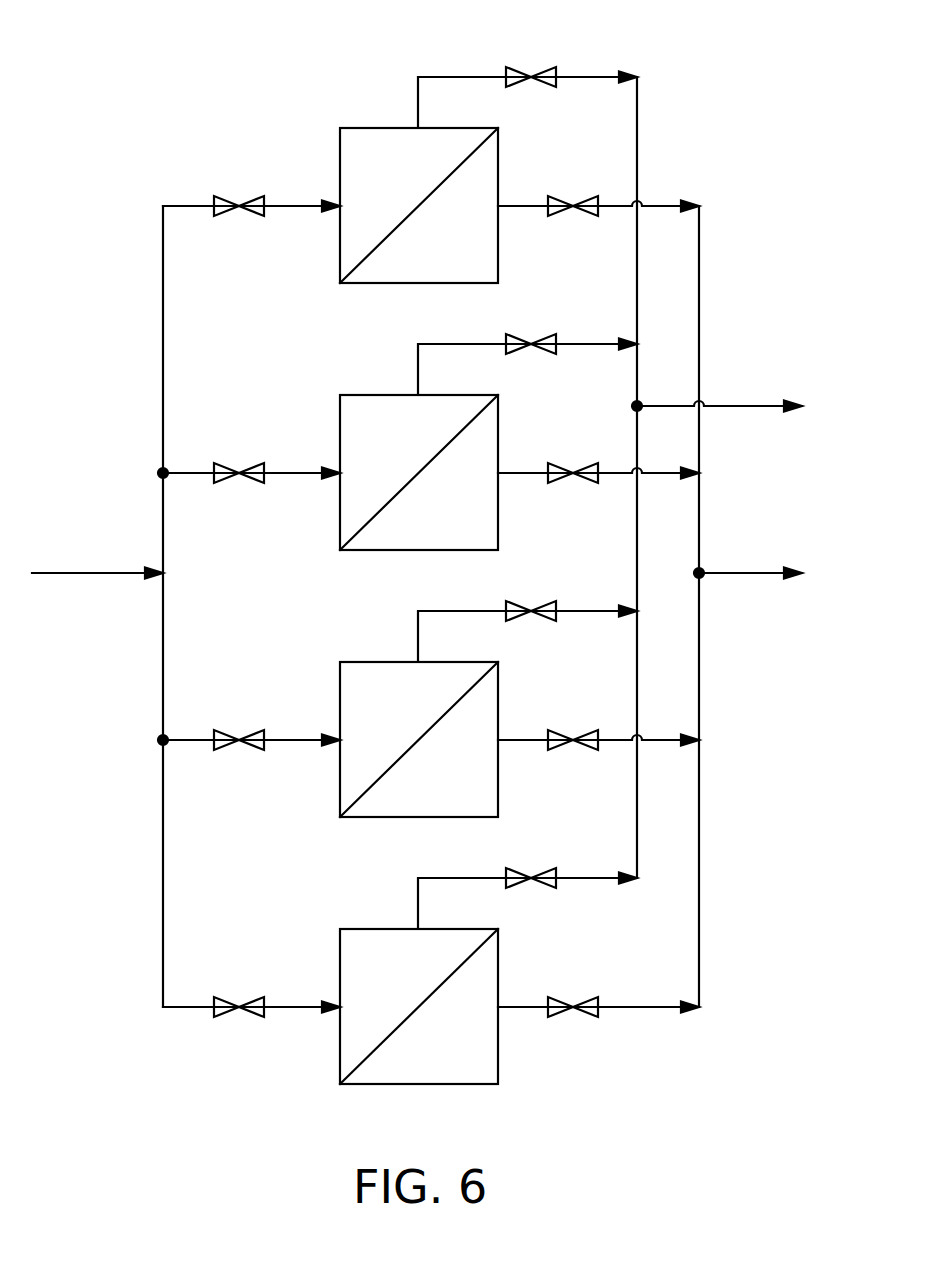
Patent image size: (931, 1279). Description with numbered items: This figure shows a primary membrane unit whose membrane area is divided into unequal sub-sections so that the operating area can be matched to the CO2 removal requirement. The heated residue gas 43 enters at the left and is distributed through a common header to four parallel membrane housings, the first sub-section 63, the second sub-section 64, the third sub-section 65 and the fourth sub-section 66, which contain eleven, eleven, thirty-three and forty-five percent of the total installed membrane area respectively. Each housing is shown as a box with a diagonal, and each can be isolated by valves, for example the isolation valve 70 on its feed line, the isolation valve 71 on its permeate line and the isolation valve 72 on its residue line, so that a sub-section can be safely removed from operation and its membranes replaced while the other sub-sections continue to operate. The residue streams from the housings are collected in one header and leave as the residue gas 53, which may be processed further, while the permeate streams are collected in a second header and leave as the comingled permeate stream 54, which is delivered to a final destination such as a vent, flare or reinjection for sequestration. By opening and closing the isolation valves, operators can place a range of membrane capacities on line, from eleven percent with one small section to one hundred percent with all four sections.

The residue gas 43 is at (77, 571).
The residue gas 53 is at (755, 404).
The comingled permeate stream 54 is at (754, 571).
The first sub-section 63 is at (419, 205).
The second sub-section 64 is at (419, 472).
The third sub-section 65 is at (419, 739).
The fourth sub-section 66 is at (419, 1006).
The isolation valve 70 is at (227, 198).
The isolation valve 71 is at (521, 67).
The isolation valve 72 is at (562, 197).